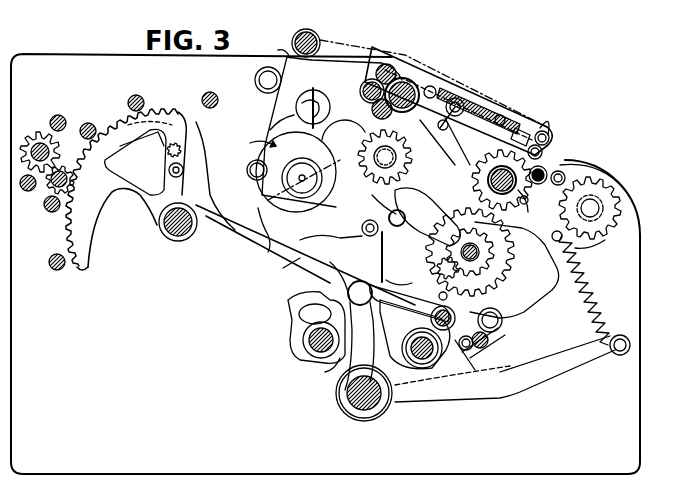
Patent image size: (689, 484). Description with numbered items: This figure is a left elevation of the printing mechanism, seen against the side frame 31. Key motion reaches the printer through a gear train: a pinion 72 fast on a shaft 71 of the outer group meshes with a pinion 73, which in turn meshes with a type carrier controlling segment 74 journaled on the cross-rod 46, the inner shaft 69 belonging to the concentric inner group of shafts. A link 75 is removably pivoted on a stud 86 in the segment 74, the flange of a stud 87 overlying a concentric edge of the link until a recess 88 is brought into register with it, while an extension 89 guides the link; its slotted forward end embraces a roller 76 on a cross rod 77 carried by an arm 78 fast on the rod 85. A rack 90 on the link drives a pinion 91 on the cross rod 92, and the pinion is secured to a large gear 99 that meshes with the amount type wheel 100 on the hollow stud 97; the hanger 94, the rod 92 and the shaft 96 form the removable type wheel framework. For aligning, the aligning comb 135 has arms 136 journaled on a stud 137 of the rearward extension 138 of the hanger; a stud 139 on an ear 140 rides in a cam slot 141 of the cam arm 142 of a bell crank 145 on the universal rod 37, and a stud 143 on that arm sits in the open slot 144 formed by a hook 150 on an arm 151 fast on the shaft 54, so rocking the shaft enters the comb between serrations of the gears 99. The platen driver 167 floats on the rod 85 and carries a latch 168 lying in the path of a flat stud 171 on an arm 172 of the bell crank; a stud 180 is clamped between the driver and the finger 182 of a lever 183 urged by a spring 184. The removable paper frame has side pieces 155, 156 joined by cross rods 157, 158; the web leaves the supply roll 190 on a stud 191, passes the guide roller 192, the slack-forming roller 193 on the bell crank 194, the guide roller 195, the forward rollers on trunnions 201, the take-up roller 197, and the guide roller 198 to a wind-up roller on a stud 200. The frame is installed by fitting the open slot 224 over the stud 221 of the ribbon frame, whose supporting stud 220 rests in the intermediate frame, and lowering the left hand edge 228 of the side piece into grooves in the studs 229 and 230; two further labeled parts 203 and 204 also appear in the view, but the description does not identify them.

The side frame 31 is at (641, 382).
The universal rod 37 is at (356, 404).
The cross-rod 46 is at (178, 241).
The shaft 54 is at (308, 345).
The shaft 69 is at (50, 186).
The shaft 71 is at (32, 144).
The pinion 72 is at (50, 123).
The pinion 73 is at (62, 166).
The type carrier controlling segment 74 is at (90, 228).
The link 75 is at (260, 236).
The roller 76 is at (434, 287).
The cross rod 77 is at (412, 307).
The arm 78 is at (405, 345).
The rod 85 is at (408, 340).
The stud 86 is at (180, 148).
The stud 87 is at (170, 173).
The recess 88 is at (162, 150).
The extension 89 is at (138, 159).
The rack 90 is at (446, 260).
The pinion 91 is at (492, 252).
The cross rod 92 is at (484, 240).
The hanger 94 is at (584, 238).
The shaft 96 is at (488, 178).
The hollow stud 97 is at (530, 202).
The large gear 99 is at (550, 284).
The amount type wheel 100 is at (535, 210).
The aligning comb 135 is at (427, 217).
The arm 136 is at (370, 201).
The stud 137 is at (388, 217).
The rearward extension 138 is at (386, 258).
The stud 139 is at (368, 238).
The ear 140 is at (331, 236).
The cam slot 141 is at (285, 270).
The cam arm 142 is at (258, 208).
The stud 143 is at (362, 306).
The open slot 144 is at (334, 281).
The bell crank 145 is at (378, 414).
The hook 150 is at (400, 275).
The arm 151 is at (288, 308).
The side piece 155 is at (542, 150).
The side piece 156 is at (272, 48).
The cross rod 157 is at (470, 104).
The cross rod 158 is at (457, 98).
The platen driver 167 is at (542, 300).
The latch 168 is at (489, 340).
The flat stud 171 is at (503, 322).
The arm 172 is at (502, 350).
The stud 180 is at (474, 346).
The finger 182 is at (470, 367).
The lever 183 is at (568, 370).
The spring 184 is at (592, 283).
The supply roll 190 is at (290, 138).
The stud 191 is at (303, 164).
The guide roller 192 is at (372, 108).
The shifting slack-forming roller 193 is at (432, 85).
The bell crank 194 is at (292, 36).
The guide roller 195 is at (396, 66).
The slack take-up roller 197 is at (320, 42).
The guide roller 198 is at (362, 88).
The stud 200 is at (296, 106).
The trunnion 201 is at (549, 134).
The roller 203 is at (343, 132).
The wall 204 is at (628, 189).
The supporting stud 220 is at (442, 130).
The stud 221 is at (547, 172).
The open slot 224 is at (565, 176).
The left hand edge 228 is at (247, 142).
The stud 229 is at (256, 77).
The stud 230 is at (248, 166).